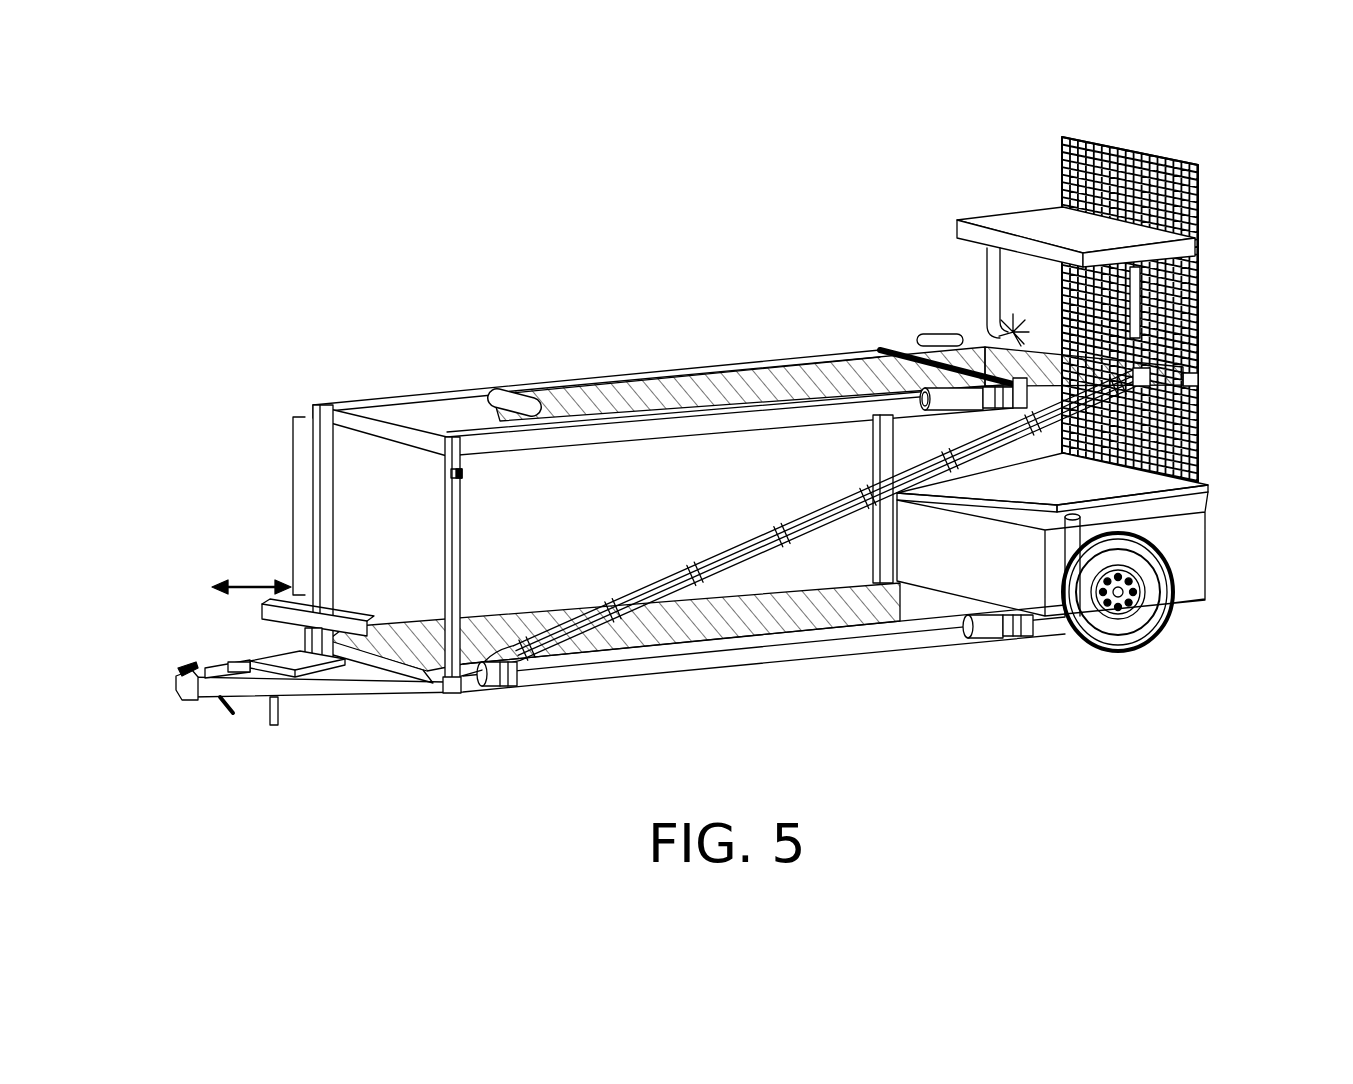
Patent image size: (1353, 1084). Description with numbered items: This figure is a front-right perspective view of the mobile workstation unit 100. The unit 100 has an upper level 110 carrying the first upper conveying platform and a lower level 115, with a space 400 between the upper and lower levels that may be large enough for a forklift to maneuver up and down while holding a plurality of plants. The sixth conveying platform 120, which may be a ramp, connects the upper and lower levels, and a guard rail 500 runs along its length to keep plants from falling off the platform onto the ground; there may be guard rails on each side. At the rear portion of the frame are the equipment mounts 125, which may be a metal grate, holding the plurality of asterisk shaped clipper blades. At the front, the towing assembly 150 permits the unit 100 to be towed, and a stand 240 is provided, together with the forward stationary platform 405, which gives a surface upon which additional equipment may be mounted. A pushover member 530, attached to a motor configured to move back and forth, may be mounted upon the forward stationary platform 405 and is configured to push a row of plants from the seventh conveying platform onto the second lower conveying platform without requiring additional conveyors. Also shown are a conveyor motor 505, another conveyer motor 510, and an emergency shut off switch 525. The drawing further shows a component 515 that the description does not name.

The unit 100 is at (212, 236).
The upper level 110 is at (353, 398).
The lower level 115 is at (417, 630).
The sixth conveying platform 120 is at (1198, 404).
The equipment mounts 125 is at (1196, 243).
The towing assembly 150 is at (180, 677).
The stand 240 is at (243, 670).
The space 400 is at (293, 503).
The forward stationary platform 405 is at (265, 647).
The guard rail 500 is at (1198, 467).
The conveyor motor 505 is at (460, 692).
The conveyer motor 510 is at (1010, 637).
The diagonal conduit bundle 515 is at (518, 678).
The emergency shut off switch 525 is at (463, 474).
The pushover member 530 is at (347, 620).